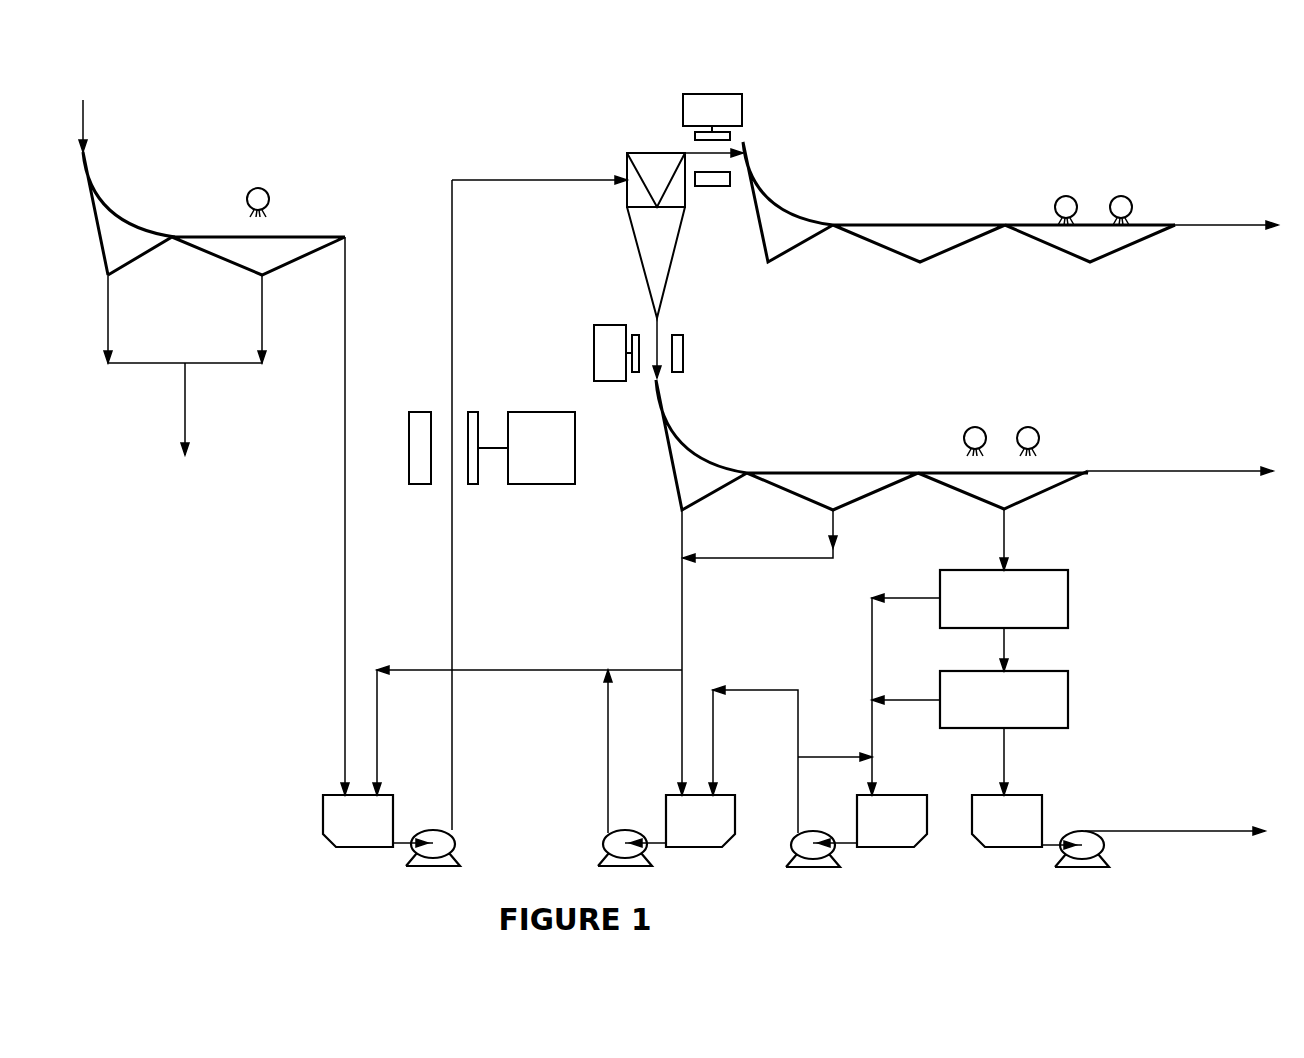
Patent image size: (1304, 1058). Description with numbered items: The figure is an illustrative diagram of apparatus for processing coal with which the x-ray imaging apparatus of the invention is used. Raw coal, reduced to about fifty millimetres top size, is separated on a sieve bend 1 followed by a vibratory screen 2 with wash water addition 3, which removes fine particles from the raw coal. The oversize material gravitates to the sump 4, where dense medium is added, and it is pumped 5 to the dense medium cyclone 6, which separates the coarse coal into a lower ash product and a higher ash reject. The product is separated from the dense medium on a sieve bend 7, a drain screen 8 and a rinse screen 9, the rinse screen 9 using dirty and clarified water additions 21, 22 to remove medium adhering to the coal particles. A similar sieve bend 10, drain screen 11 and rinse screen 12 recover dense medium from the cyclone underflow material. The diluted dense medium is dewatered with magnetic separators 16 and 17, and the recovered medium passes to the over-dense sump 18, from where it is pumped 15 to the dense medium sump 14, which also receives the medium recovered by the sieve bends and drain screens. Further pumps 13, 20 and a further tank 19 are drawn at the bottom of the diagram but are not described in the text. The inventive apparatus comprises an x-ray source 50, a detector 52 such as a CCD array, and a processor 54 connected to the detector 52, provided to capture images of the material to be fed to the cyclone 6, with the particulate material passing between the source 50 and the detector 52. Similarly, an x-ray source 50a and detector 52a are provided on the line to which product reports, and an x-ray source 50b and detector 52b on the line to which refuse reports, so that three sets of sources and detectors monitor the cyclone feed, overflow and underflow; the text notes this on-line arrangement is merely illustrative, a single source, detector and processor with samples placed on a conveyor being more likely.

The sieve bend 1 is at (107, 223).
The vibratory screen 2 is at (290, 247).
The wash water addition 3 is at (257, 188).
The sump 4 is at (345, 817).
The pump 5 is at (440, 849).
The dense medium cyclone 6 is at (648, 152).
The sieve bend 7 is at (793, 232).
The drain screen 8 is at (907, 240).
The rinse screen 9 is at (1105, 240).
The sieve bend 10 is at (690, 478).
The drain screen 11 is at (833, 485).
The rinse screen 12 is at (1008, 487).
The pump 13 is at (612, 847).
The dense medium sump 14 is at (676, 814).
The pump 15 is at (802, 847).
The magnetic separator 16 is at (1016, 612).
The magnetic separator 17 is at (1015, 709).
The over-dense sump 18 is at (897, 826).
The collection tank 19 is at (1022, 818).
The pump 20 is at (1105, 843).
The water addition 21 is at (1066, 195).
The water addition 22 is at (968, 426).
The x-ray source 50 is at (412, 415).
The x-ray source 50a is at (718, 186).
The x-ray source 50b is at (683, 355).
The detector 52 is at (476, 412).
The detector 52a is at (733, 110).
The detector 52b is at (604, 325).
The processor 54 is at (523, 470).